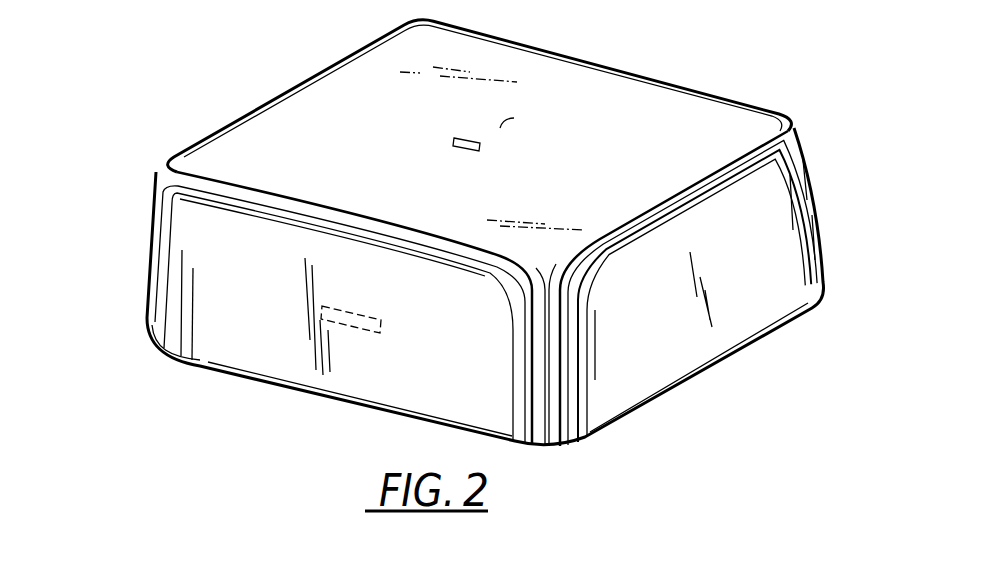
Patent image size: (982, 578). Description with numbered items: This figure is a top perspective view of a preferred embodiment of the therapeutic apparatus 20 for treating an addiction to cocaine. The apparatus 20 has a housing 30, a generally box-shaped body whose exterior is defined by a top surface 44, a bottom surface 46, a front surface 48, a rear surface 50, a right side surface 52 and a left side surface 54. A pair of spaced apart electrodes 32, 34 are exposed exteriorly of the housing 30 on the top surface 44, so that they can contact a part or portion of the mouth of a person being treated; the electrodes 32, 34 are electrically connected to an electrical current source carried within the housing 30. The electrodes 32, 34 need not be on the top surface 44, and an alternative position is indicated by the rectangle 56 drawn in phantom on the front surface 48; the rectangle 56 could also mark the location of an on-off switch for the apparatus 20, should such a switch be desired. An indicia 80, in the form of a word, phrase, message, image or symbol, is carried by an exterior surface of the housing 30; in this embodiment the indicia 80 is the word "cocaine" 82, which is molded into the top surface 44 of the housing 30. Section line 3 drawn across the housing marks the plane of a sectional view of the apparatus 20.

The apparatus 20 is at (457, 227).
The housing 30 is at (740, 100).
The electrode 32 is at (467, 138).
The electrode 34 is at (524, 117).
The top surface 44 is at (664, 118).
The bottom surface 46 is at (664, 413).
The front surface 48 is at (396, 396).
The rear surface 50 is at (815, 152).
The right side surface 52 is at (695, 355).
The left side surface 54 is at (133, 268).
The rectangle 56 is at (345, 327).
The indicia 80 is at (380, 100).
The word "cocaine" 82 is at (368, 117).
The section line 3 is at (202, 129).